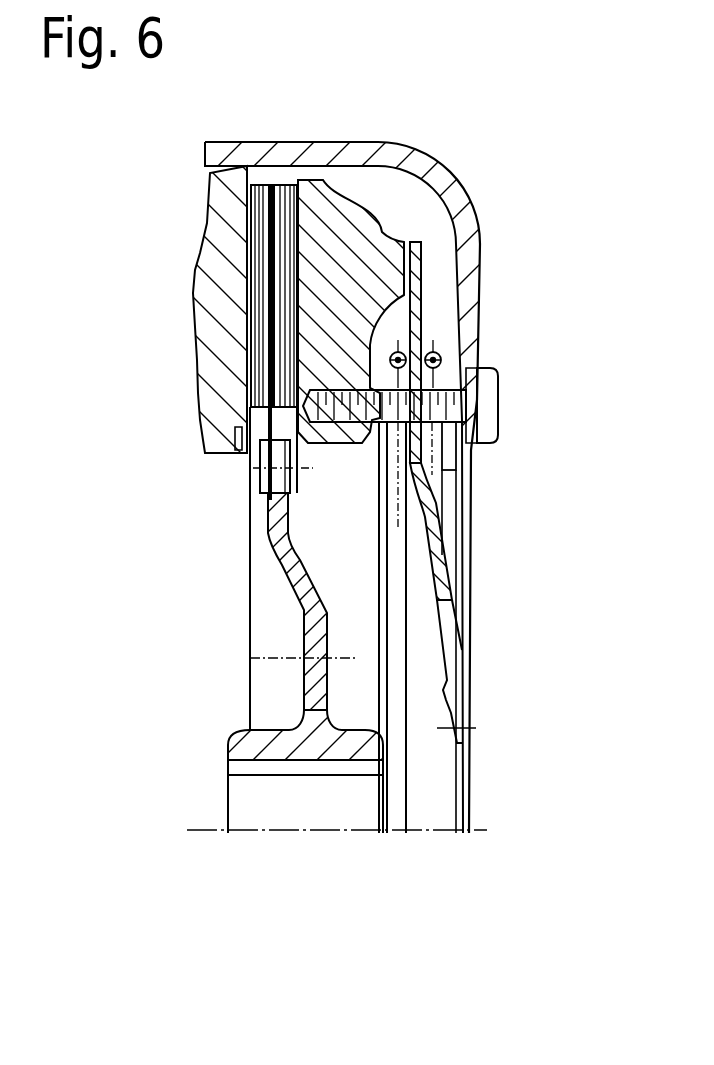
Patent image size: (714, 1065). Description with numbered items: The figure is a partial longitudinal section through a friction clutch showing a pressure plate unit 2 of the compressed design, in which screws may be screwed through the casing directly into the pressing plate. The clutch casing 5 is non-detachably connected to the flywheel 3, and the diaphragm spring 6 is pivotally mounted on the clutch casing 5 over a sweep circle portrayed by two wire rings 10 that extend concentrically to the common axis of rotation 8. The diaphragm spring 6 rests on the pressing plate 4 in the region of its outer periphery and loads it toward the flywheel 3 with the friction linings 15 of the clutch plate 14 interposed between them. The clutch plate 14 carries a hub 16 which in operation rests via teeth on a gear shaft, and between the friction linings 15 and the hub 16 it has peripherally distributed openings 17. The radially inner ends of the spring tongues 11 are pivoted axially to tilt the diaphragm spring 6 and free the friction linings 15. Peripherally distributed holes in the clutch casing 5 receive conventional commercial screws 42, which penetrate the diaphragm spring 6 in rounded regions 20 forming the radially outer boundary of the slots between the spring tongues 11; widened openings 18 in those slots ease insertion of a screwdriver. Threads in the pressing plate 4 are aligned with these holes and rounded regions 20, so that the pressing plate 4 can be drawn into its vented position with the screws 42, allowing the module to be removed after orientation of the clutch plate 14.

The pressure plate unit 2 is at (522, 145).
The flywheel 3 is at (205, 268).
The pressing plate 4 is at (348, 215).
The clutch casing 5 is at (421, 168).
The diaphragm spring 6 is at (418, 307).
The axis of rotation 8 is at (187, 832).
The wire rings 10 is at (406, 352).
The spring tongues 11 is at (437, 567).
The clutch plate 14 is at (277, 528).
The friction linings 15 is at (266, 185).
The hub 16 is at (248, 740).
The openings 17 is at (313, 625).
The openings 18 is at (452, 658).
The rounded regions 20 is at (449, 442).
The screws 42 is at (463, 398).